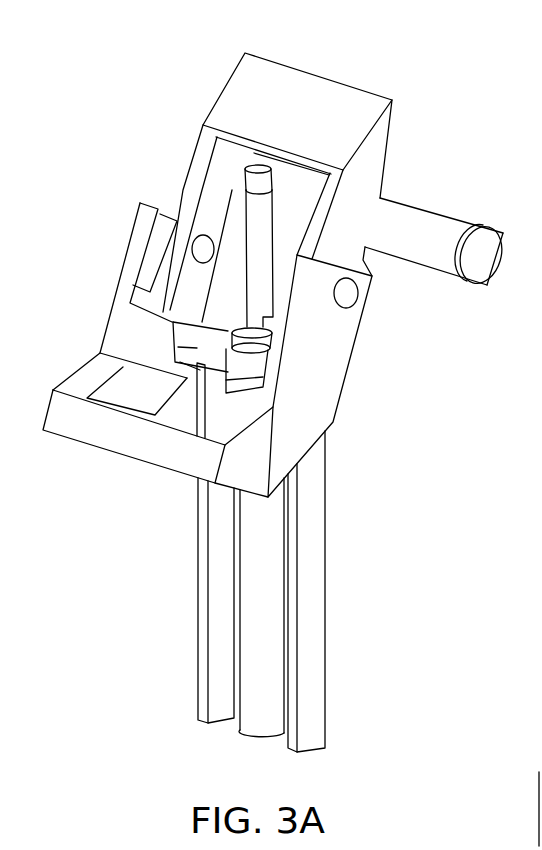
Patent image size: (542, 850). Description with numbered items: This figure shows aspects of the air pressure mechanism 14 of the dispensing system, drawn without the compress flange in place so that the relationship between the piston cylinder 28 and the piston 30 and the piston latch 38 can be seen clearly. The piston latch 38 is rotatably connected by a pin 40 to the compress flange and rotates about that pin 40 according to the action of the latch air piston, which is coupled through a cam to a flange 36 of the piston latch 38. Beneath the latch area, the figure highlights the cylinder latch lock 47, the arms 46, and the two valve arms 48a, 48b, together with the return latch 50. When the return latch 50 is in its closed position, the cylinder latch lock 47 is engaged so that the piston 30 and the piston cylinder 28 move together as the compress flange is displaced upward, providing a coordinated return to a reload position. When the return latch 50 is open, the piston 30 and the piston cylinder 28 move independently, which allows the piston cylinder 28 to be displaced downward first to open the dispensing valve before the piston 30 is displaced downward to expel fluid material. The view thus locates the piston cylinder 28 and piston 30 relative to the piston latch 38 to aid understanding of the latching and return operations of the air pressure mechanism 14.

The air pressure mechanism 14 is at (210, 37).
The piston cylinder 28 is at (243, 730).
The piston 30 is at (258, 217).
The flange 36 is at (437, 220).
The piston latch 38 is at (312, 90).
The pin 40 is at (538, 808).
The arms 46 is at (187, 338).
The cylinder latch lock 47 is at (350, 423).
The valve arm 48a is at (315, 663).
The valve arm 48b is at (197, 545).
The return latch 50 is at (82, 370).